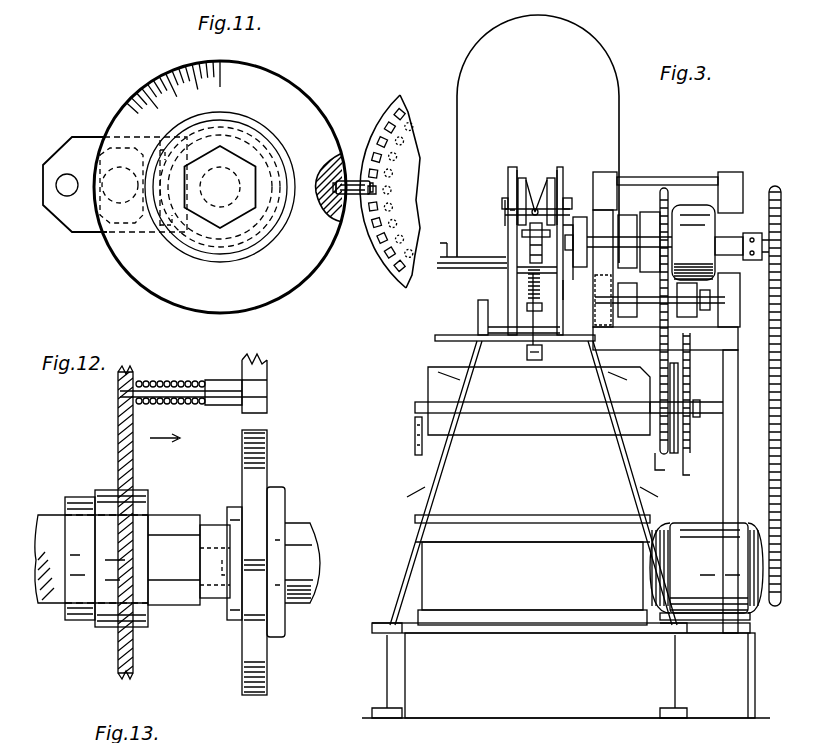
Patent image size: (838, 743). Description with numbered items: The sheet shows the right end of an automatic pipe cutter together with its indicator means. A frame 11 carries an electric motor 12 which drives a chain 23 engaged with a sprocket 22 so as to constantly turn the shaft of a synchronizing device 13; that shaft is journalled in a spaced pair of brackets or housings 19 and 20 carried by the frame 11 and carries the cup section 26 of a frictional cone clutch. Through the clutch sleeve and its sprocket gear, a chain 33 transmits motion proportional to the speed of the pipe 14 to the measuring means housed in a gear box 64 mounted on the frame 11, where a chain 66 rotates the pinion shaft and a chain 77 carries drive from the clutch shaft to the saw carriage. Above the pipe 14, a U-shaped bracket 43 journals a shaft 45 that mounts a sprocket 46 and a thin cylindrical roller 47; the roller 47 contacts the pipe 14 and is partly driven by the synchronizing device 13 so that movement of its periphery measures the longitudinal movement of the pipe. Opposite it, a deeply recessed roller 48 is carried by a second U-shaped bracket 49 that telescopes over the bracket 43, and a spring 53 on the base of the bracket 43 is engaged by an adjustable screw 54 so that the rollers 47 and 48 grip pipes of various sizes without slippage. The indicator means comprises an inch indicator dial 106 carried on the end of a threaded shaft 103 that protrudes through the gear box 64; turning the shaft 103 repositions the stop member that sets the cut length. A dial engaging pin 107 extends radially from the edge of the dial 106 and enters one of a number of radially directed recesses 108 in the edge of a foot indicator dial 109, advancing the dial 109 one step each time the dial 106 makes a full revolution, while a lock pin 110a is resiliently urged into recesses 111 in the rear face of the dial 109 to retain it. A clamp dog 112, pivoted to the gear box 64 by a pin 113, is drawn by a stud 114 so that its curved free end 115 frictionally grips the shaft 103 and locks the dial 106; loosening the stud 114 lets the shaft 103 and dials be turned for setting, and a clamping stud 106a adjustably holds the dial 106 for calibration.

In FIG. 11, the inch indicator dial 106 is at (306, 91).
In FIG. 11, the curved free end 115 is at (190, 162).
In FIG. 11, the clamping stud 106a is at (221, 230).
In FIG. 12, the clamping stud 106a is at (298, 604).
In FIG. 11, the pin 113 is at (66, 174).
In FIG. 11, the clamp dog 112 is at (75, 236).
In FIG. 12, the clamp dog 112 is at (178, 516).
In FIG. 11, the stud 114 is at (90, 160).
In FIG. 12, the stud 114 is at (208, 600).
In FIG. 11, the dial engaging pin 107 is at (349, 203).
In FIG. 11, the foot indicator dial 109 is at (384, 112).
In FIG. 12, the foot indicator dial 109 is at (268, 382).
In FIG. 3, the foot indicator dial 109 is at (415, 456).
In FIG. 11, the radially directed recesses 108 is at (382, 266).
In FIG. 11, the recesses 111 is at (400, 172).
In FIG. 12, the lock pin 110a is at (203, 406).
In FIG. 12, the threaded shaft 103 is at (48, 606).
In FIG. 12, the gear box 64 is at (133, 658).
In FIG. 3, the frame 11 is at (552, 437).
In FIG. 3, the electric motor 12 is at (700, 518).
In FIG. 3, the chain 23 is at (781, 428).
In FIG. 3, the sprocket 22 is at (782, 200).
In FIG. 3, the chain 33 is at (668, 194).
In FIG. 3, the chain 77 is at (690, 368).
In FIG. 3, the chain 66 is at (679, 456).
In FIG. 3, the housing 20 is at (731, 174).
In FIG. 3, the synchronizing device 13 is at (687, 167).
In FIG. 3, the housing 19 is at (606, 181).
In FIG. 3, the cup section 26 is at (705, 230).
In FIG. 3, the sprocket 46 is at (580, 216).
In FIG. 3, the shaft 45 is at (566, 282).
In FIG. 3, the pipe 14 is at (526, 210).
In FIG. 3, the U-shaped bracket 43 is at (516, 172).
In FIG. 3, the deeply recessed roller 48 is at (535, 200).
In FIG. 3, the second U-shaped bracket 49 is at (505, 224).
In FIG. 3, the thin cylindrical roller 47 is at (530, 252).
In FIG. 3, the spring 53 is at (528, 290).
In FIG. 3, the adjustable screw 54 is at (532, 361).